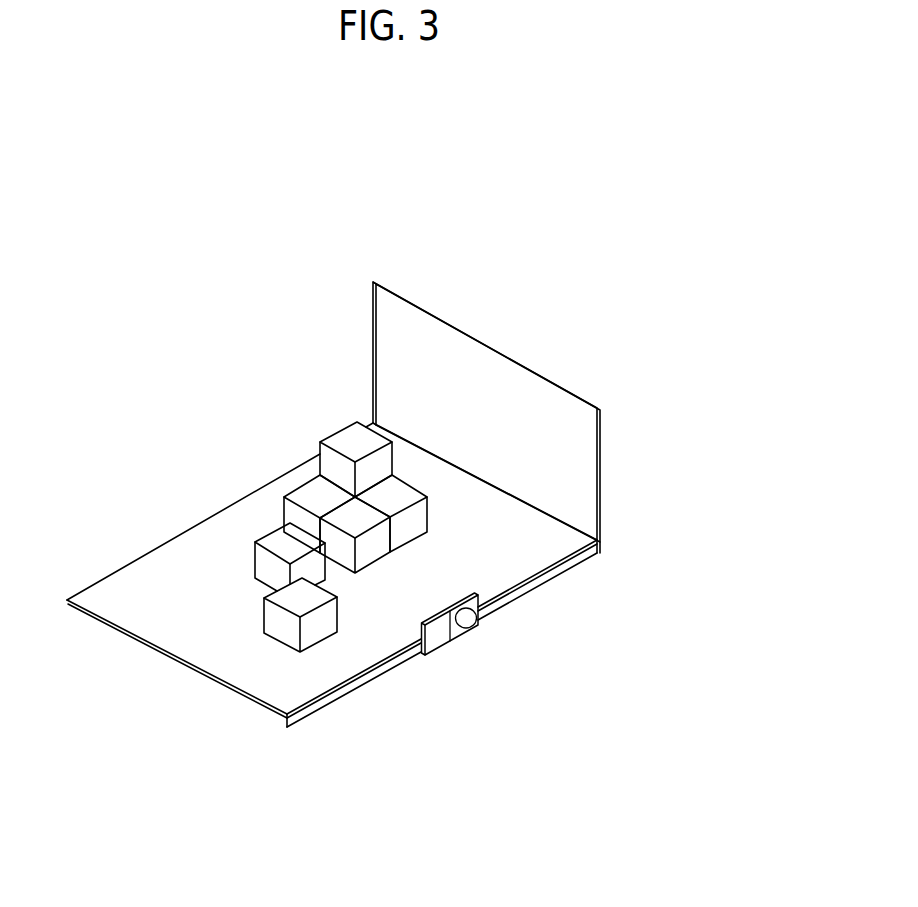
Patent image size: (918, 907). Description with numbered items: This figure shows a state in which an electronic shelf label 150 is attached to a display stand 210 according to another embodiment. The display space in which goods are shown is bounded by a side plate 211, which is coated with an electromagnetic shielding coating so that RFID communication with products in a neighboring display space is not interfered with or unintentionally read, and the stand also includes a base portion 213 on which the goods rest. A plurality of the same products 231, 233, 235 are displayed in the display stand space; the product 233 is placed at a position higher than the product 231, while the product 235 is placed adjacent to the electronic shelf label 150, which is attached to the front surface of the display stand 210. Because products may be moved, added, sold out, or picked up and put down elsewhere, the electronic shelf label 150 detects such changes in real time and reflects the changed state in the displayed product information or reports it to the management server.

The electronic shelf label 150 is at (452, 641).
The display stand 210 is at (396, 504).
The side plate 211 is at (573, 466).
The base plate 213 is at (507, 548).
The product 231 is at (405, 493).
The product 233 is at (353, 437).
The product 235 is at (290, 593).